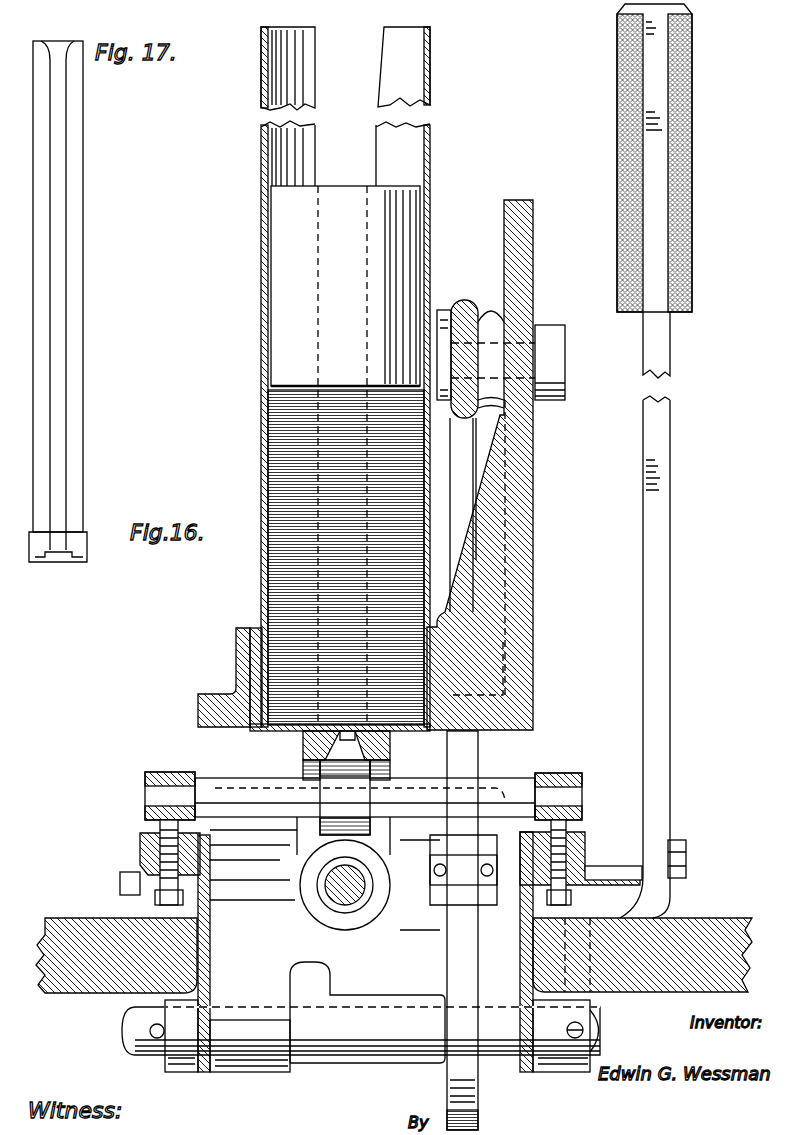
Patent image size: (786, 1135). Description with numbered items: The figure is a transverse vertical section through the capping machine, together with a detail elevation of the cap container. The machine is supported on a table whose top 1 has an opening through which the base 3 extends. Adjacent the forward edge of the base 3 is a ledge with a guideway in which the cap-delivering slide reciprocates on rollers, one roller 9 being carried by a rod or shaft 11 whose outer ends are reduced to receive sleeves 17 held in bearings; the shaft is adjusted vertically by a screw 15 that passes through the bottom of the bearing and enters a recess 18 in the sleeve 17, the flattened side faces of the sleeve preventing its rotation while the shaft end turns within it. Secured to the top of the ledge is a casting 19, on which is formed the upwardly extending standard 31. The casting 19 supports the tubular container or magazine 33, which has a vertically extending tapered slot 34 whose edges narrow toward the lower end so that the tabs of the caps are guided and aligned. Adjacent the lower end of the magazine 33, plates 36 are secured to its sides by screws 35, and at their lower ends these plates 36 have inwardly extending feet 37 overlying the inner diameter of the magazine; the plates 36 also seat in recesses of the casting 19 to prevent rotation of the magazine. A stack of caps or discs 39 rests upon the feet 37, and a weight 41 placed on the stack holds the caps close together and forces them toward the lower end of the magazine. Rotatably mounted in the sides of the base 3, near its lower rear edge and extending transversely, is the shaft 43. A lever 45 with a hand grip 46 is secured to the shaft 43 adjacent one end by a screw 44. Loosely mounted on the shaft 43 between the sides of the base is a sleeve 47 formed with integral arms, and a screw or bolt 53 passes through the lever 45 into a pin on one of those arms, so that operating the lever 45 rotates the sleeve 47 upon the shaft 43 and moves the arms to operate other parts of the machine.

In FIG. 16, the top 1 is at (96, 988).
In FIG. 16, the base 3 is at (207, 1072).
In FIG. 16, the roller 9 is at (365, 797).
In FIG. 16, the rod or shaft 11 is at (288, 808).
In FIG. 16, the adjusting screw 15 is at (140, 858).
In FIG. 16, the sleeve 17 is at (160, 774).
In FIG. 16, the recess 18 is at (160, 826).
In FIG. 16, the casting 19 is at (222, 698).
In FIG. 16, the standard 31 is at (520, 572).
In FIG. 17, the container or magazine 33 is at (66, 342).
In FIG. 16, the container or magazine 33 is at (430, 132).
In FIG. 17, the tapered slot 34 is at (62, 200).
In FIG. 16, the tapered slot 34 is at (376, 160).
In FIG. 16, the screw 35 is at (250, 644).
In FIG. 16, the plate 36 is at (262, 626).
In FIG. 16, the foot 37 is at (290, 735).
In FIG. 16, the caps or discs 39 is at (346, 557).
In FIG. 16, the weight 41 is at (345, 455).
In FIG. 16, the shaft 43 is at (306, 1056).
In FIG. 16, the screw 44 is at (583, 1028).
In FIG. 16, the lever 45 is at (672, 368).
In FIG. 16, the hand grip 46 is at (692, 268).
In FIG. 16, the sleeve 47 is at (403, 990).
In FIG. 16, the screw or bolt 53 is at (690, 860).